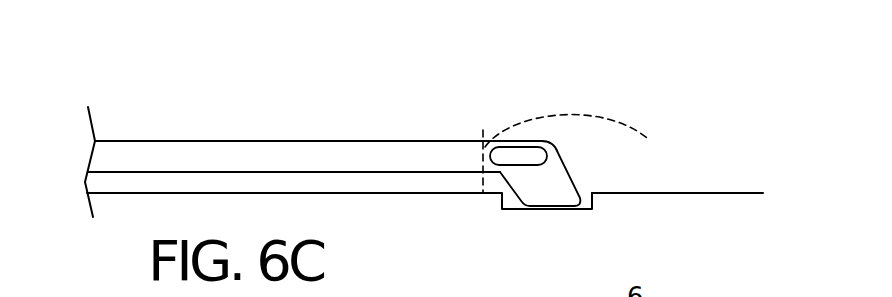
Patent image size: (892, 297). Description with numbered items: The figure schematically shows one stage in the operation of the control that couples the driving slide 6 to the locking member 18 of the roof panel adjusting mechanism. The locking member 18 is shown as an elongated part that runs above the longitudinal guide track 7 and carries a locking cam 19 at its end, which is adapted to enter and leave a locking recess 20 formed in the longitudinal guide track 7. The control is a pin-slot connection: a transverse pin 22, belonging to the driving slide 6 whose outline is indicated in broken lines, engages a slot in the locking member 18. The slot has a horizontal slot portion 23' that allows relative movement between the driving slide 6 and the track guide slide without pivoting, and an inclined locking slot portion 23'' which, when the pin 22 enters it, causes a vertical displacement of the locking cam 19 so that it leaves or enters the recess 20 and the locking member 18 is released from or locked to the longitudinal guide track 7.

The locking member 18 is at (195, 141).
The horizontal slot portion 23' is at (294, 121).
The inclined locking slot portion 23'' is at (575, 165).
The transverse cam or pin 22 is at (520, 155).
The locking cam 19 is at (522, 193).
The locking recess 20 is at (597, 203).
The longitudinal guide track 7 is at (733, 194).
The driving slide 6 is at (578, 113).